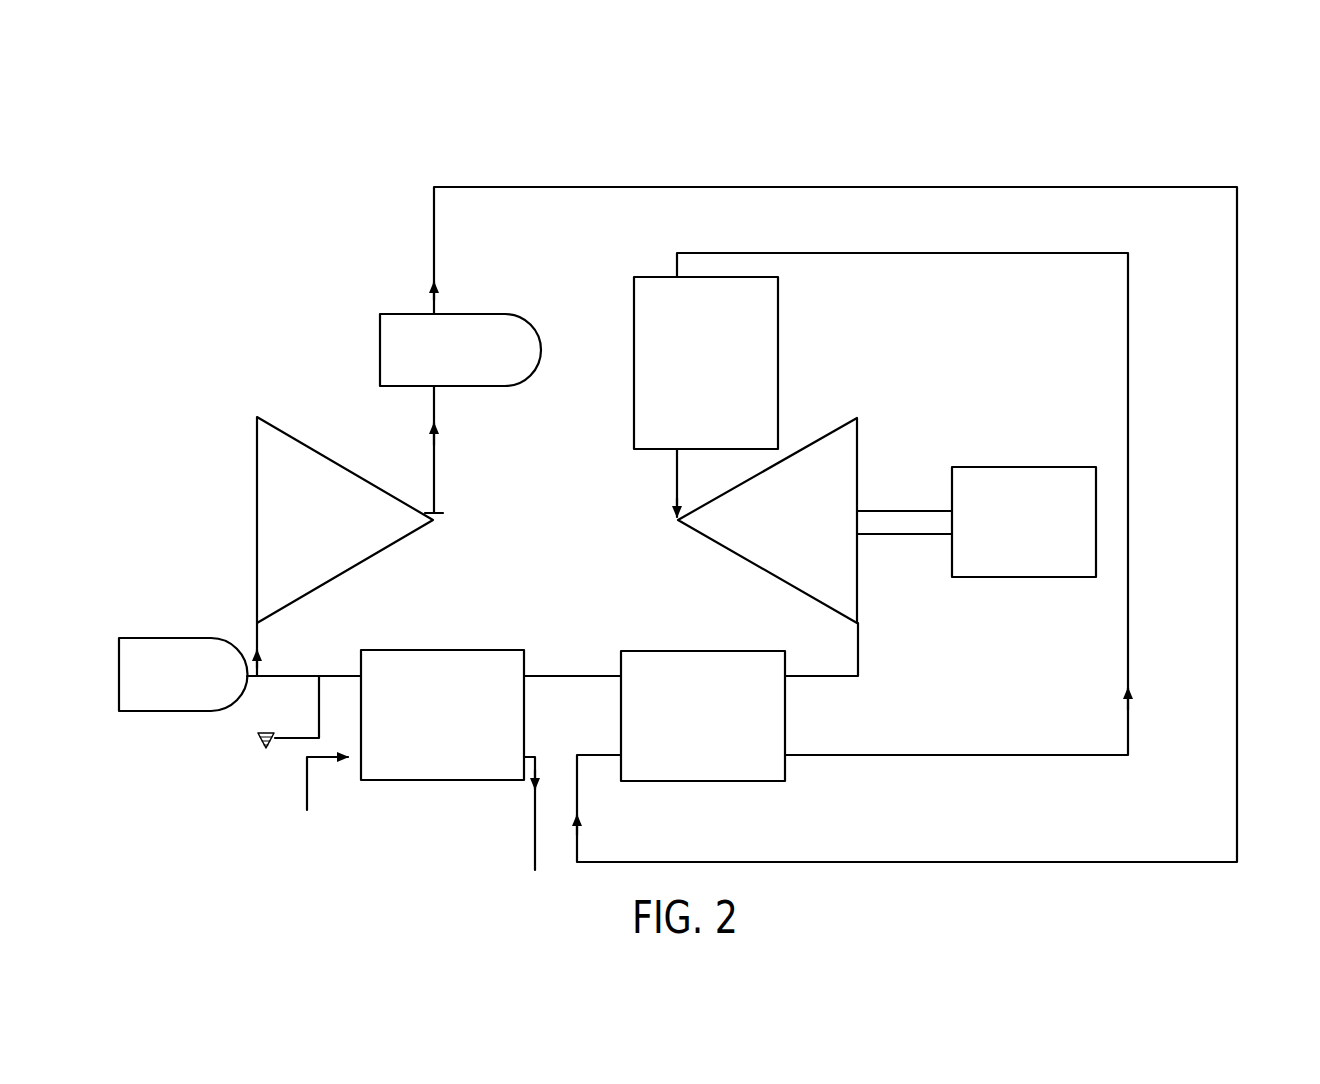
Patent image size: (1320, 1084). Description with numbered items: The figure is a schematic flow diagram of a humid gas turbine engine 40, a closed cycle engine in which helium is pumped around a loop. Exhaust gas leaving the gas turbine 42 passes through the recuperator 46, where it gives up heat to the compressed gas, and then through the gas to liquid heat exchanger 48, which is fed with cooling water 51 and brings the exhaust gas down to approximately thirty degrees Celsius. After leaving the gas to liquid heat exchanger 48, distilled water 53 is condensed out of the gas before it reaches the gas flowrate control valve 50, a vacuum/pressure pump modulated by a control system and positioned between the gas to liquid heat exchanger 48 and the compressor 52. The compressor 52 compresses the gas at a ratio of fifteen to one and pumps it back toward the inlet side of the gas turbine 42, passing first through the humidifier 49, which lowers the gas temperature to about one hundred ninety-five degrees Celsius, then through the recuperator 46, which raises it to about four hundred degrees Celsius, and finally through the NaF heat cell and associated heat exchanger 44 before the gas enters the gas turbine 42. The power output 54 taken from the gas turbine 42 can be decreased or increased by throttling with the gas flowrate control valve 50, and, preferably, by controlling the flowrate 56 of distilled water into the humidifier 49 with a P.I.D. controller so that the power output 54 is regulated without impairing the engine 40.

The humid gas turbine engine 40 is at (1264, 131).
The gas turbine 42 is at (857, 438).
The NaF heat cell and associated heat exchanger 44 is at (778, 337).
The recuperator 46 is at (692, 651).
The gas to liquid heat exchanger 48 is at (437, 781).
The humidifier 49 is at (404, 314).
The gas flowrate control valve 50 is at (172, 638).
The cooling water 51 is at (338, 758).
The compressor 52 is at (255, 493).
The distilled water 53 is at (297, 740).
The power output 54 is at (1018, 467).
The flowrate of distilled water 56 is at (368, 348).